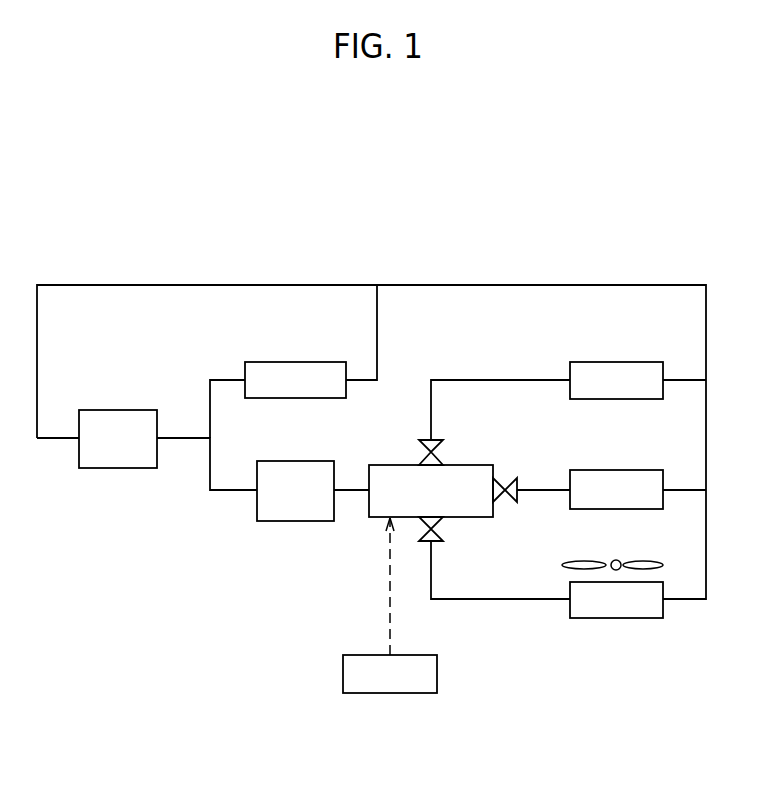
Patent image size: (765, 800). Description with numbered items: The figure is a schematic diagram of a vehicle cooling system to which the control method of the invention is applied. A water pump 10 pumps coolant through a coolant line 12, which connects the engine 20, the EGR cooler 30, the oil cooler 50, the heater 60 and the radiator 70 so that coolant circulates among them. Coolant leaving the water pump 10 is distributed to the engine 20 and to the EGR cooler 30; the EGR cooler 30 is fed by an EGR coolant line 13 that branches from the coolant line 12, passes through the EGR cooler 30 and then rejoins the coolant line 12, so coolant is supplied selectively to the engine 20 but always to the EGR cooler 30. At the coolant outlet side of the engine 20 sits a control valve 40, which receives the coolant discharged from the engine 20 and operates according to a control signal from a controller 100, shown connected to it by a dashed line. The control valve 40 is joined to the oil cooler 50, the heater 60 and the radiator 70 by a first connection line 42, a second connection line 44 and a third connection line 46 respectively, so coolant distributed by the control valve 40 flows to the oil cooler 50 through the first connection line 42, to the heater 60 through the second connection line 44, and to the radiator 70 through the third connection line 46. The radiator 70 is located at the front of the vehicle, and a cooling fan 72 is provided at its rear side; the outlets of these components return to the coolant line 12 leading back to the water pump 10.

The water pump 10 is at (95, 468).
The coolant line 12 is at (213, 285).
The EGR coolant line 13 is at (210, 393).
The engine 20 is at (297, 521).
The EGR cooler 30 is at (273, 362).
The control valve 40 is at (386, 465).
The first connection line 42 is at (535, 380).
The second connection line 44 is at (537, 490).
The third connection line 46 is at (540, 601).
The oil cooler 50 is at (628, 362).
The heater 60 is at (628, 470).
The radiator 70 is at (634, 618).
The cooling fan 72 is at (563, 565).
The controller 100 is at (343, 673).